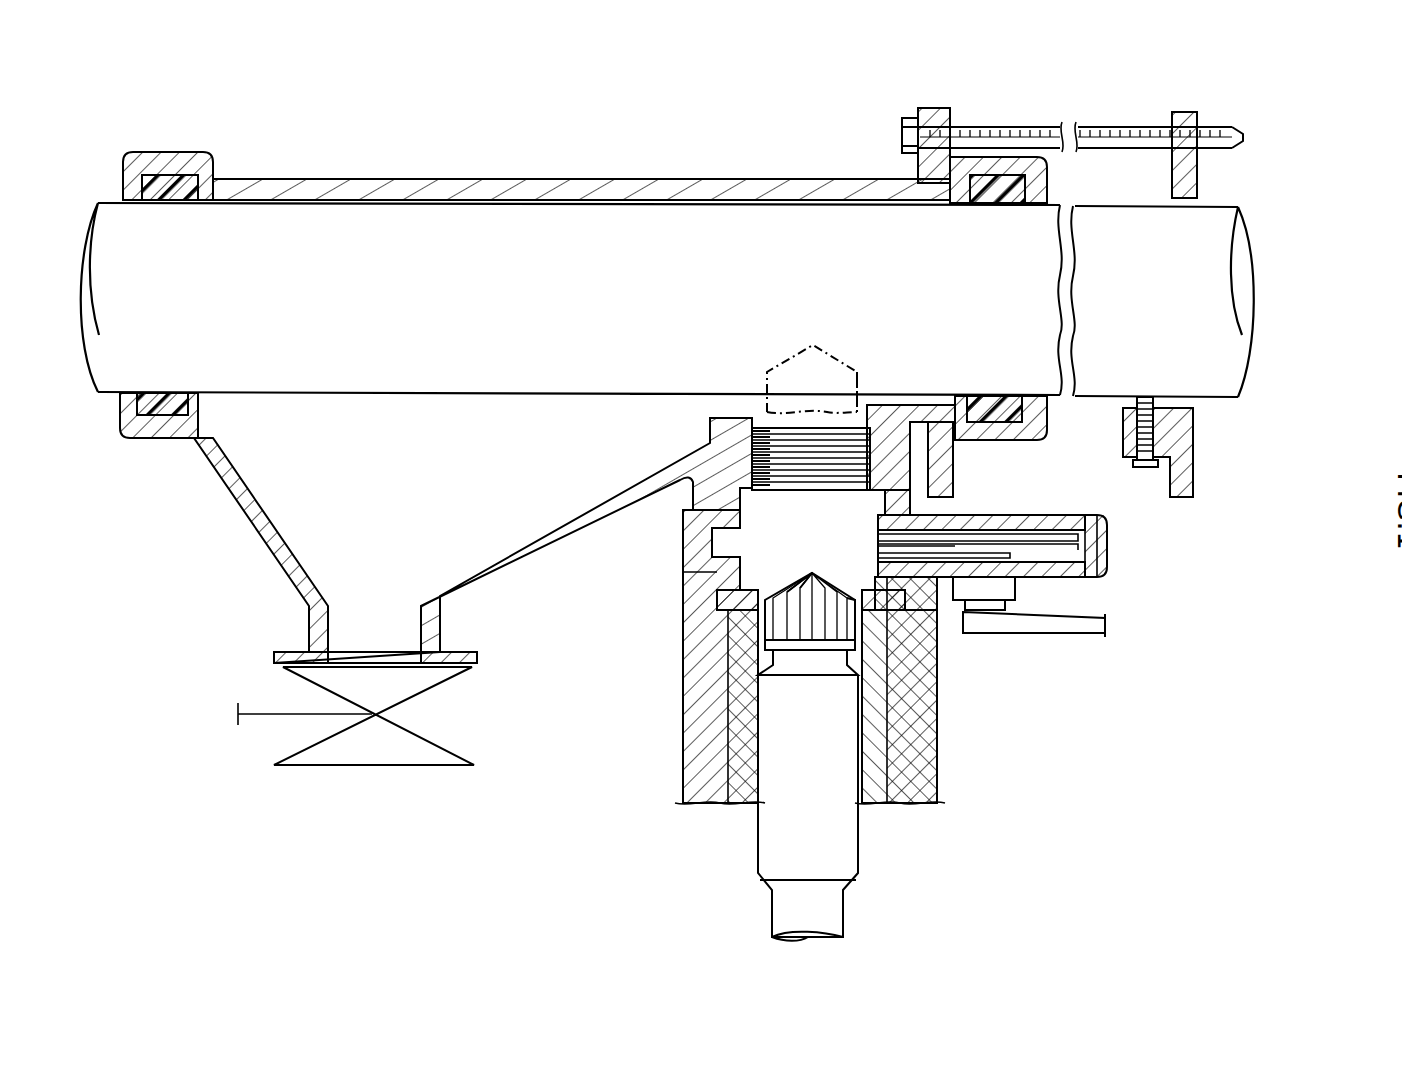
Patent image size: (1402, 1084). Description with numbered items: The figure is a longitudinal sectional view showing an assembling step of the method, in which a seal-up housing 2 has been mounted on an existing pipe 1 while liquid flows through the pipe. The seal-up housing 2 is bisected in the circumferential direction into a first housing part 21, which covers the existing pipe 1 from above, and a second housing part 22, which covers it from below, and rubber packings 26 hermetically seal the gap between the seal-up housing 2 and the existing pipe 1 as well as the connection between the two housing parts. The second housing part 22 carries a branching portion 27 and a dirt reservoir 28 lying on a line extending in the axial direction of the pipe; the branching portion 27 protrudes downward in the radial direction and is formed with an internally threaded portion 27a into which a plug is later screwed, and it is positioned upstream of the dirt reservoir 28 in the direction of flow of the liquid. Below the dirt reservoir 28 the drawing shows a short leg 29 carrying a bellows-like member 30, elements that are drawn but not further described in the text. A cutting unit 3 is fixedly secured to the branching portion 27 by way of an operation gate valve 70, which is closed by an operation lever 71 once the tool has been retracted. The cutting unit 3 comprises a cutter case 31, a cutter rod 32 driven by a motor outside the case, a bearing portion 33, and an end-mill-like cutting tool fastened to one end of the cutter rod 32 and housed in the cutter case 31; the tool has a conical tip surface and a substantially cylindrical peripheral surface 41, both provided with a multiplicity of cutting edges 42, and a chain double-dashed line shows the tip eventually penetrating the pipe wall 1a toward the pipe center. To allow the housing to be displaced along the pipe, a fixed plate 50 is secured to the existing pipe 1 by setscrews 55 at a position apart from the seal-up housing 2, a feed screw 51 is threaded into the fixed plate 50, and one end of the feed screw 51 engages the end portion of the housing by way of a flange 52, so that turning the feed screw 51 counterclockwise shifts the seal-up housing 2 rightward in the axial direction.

The existing pipe 1 is at (1220, 208).
The pipe wall 1a is at (648, 397).
The seal-up housing 2 is at (680, 277).
The cutting unit 3 is at (819, 684).
The first housing part 21 is at (513, 178).
The second housing part 22 is at (575, 540).
The rubber packings 26 is at (162, 420).
The branching portion 27 is at (953, 488).
The internally threaded portion 27a is at (953, 460).
The dirt reservoir 28 is at (306, 476).
The leg 29 is at (311, 616).
The bellows 30 is at (302, 748).
The cutter case 31 is at (940, 683).
The cutter rod 32 is at (827, 915).
The bearing portion 33 is at (872, 793).
The peripheral surface 41 is at (835, 607).
The cutting edges 42 is at (792, 603).
The fixed plate 50 is at (1187, 112).
The feed screw 51 is at (1007, 128).
The flange 52 is at (940, 107).
The setscrews 55 is at (1145, 468).
The operation gate valve 70 is at (1108, 555).
The operation lever 71 is at (1053, 627).